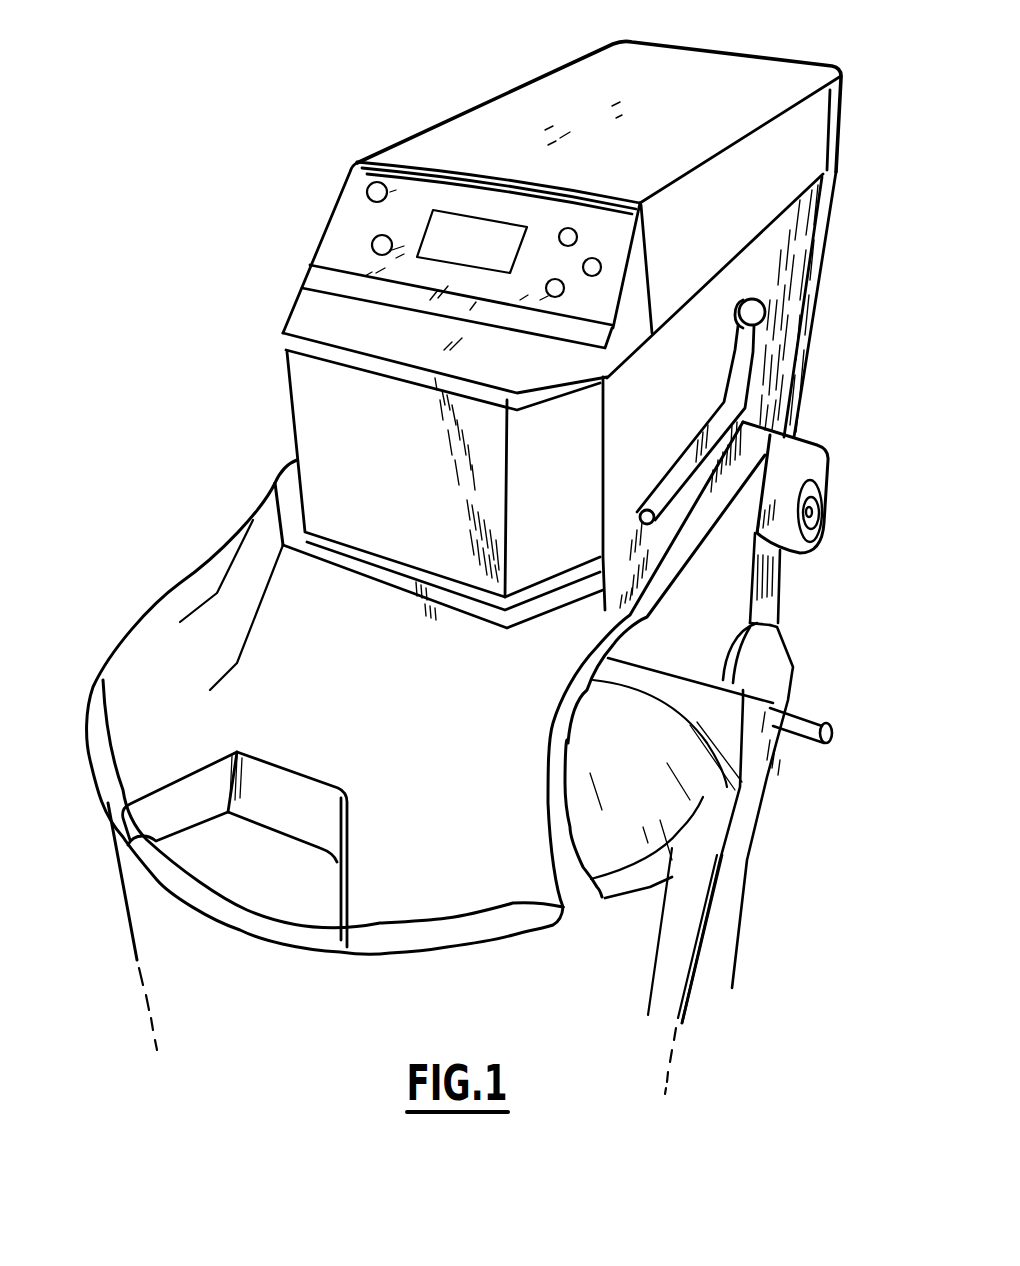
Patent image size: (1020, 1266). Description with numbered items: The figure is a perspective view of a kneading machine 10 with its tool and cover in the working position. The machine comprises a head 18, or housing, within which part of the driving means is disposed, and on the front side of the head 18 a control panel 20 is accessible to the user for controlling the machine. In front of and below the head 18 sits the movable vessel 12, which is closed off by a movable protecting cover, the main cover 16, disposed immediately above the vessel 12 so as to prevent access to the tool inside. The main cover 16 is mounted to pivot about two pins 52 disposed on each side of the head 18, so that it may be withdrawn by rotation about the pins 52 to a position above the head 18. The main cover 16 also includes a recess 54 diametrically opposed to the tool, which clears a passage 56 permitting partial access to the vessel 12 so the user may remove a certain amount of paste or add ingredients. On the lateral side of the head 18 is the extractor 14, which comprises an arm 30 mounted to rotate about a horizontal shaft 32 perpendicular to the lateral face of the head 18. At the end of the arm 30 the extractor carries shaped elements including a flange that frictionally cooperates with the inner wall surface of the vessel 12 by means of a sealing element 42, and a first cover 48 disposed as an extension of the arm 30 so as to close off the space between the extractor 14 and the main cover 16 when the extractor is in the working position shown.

The kneading machine 10 is at (288, 310).
The movable vessel 12 is at (161, 881).
The extractor 14 is at (826, 473).
The main cover 16 is at (292, 693).
The head 18 is at (536, 112).
The control panel 20 is at (355, 213).
The arm 30 is at (714, 546).
The horizontal shaft 32 is at (815, 510).
The sealing element 42 is at (707, 622).
The first cover 48 is at (614, 850).
The pins 52 is at (758, 310).
The recess 54 is at (290, 766).
The passage 56 is at (232, 813).